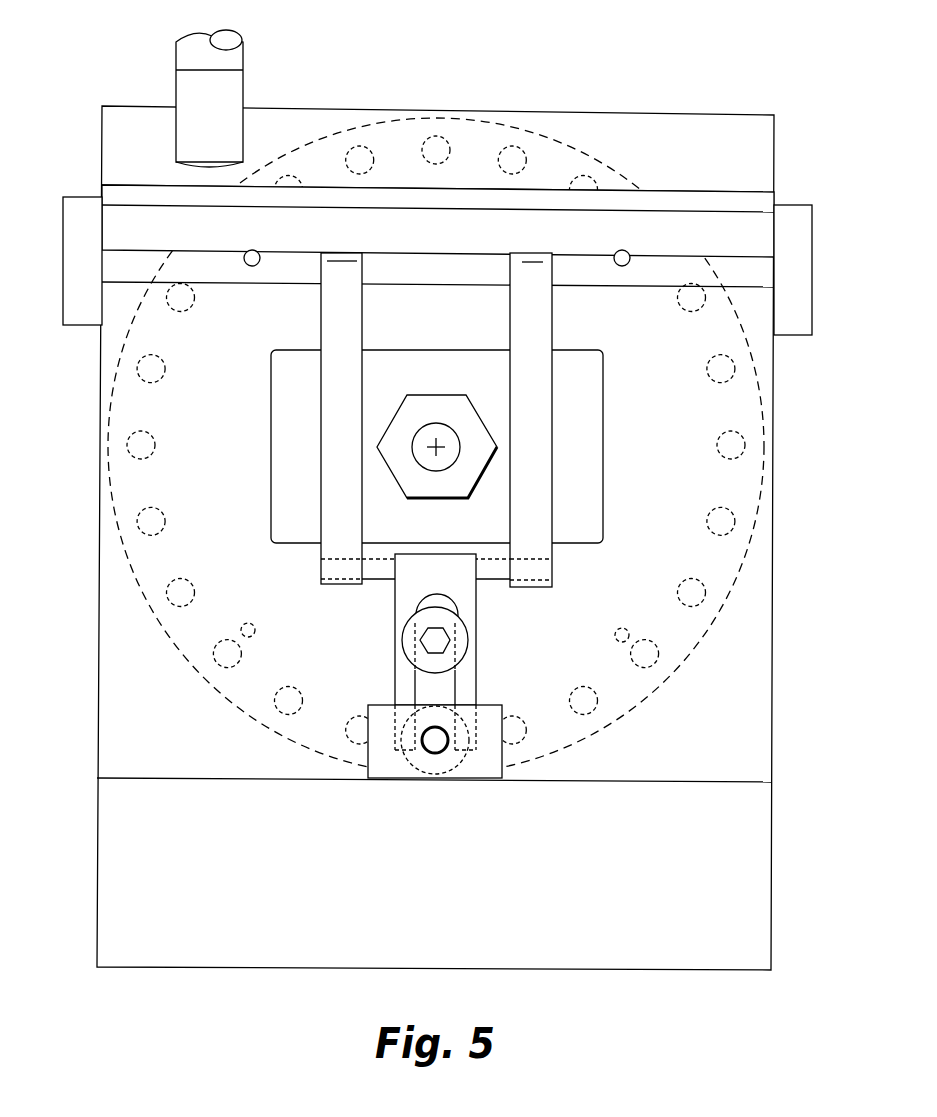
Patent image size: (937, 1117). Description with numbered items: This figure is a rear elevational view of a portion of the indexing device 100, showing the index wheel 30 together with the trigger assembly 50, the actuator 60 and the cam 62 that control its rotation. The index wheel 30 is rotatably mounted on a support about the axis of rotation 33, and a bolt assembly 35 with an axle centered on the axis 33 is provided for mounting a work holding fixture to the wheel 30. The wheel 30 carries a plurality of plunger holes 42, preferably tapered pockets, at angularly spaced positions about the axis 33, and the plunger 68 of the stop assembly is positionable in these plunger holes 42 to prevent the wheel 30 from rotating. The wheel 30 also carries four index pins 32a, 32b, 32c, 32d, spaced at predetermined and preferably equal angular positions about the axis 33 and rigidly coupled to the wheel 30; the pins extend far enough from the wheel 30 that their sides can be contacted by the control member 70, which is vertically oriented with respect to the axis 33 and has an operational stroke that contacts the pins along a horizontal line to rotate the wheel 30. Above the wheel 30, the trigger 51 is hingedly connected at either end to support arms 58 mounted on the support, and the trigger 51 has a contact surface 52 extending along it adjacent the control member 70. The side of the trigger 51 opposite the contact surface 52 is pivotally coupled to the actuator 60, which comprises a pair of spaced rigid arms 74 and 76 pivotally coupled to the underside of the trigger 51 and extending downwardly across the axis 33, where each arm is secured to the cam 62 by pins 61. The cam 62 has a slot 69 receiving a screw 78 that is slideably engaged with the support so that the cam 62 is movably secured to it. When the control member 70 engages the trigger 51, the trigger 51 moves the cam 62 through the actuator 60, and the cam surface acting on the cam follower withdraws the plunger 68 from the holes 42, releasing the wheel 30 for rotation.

The index wheel 30 is at (425, 122).
The index pin 32a is at (622, 266).
The index pin 32b is at (618, 630).
The index pin 32c is at (250, 623).
The index pin 32d is at (252, 266).
The axis of rotation 33 is at (430, 440).
The bolt assembly 35 is at (478, 407).
The plunger holes 42 is at (597, 182).
The trigger assembly 50 is at (730, 150).
The trigger 51 is at (755, 200).
The contact surface 52 is at (701, 192).
The support arms 58 is at (63, 252).
The actuator 60 is at (314, 303).
The pins 61 is at (342, 568).
The cam 62 is at (476, 633).
The plunger 68 is at (433, 753).
The slot 69 is at (405, 597).
The control member 70 is at (387, 784).
The rigid arm 74 is at (342, 437).
The rigid arm 76 is at (537, 443).
The screw 78 is at (466, 662).
The indexing device 100 is at (90, 438).